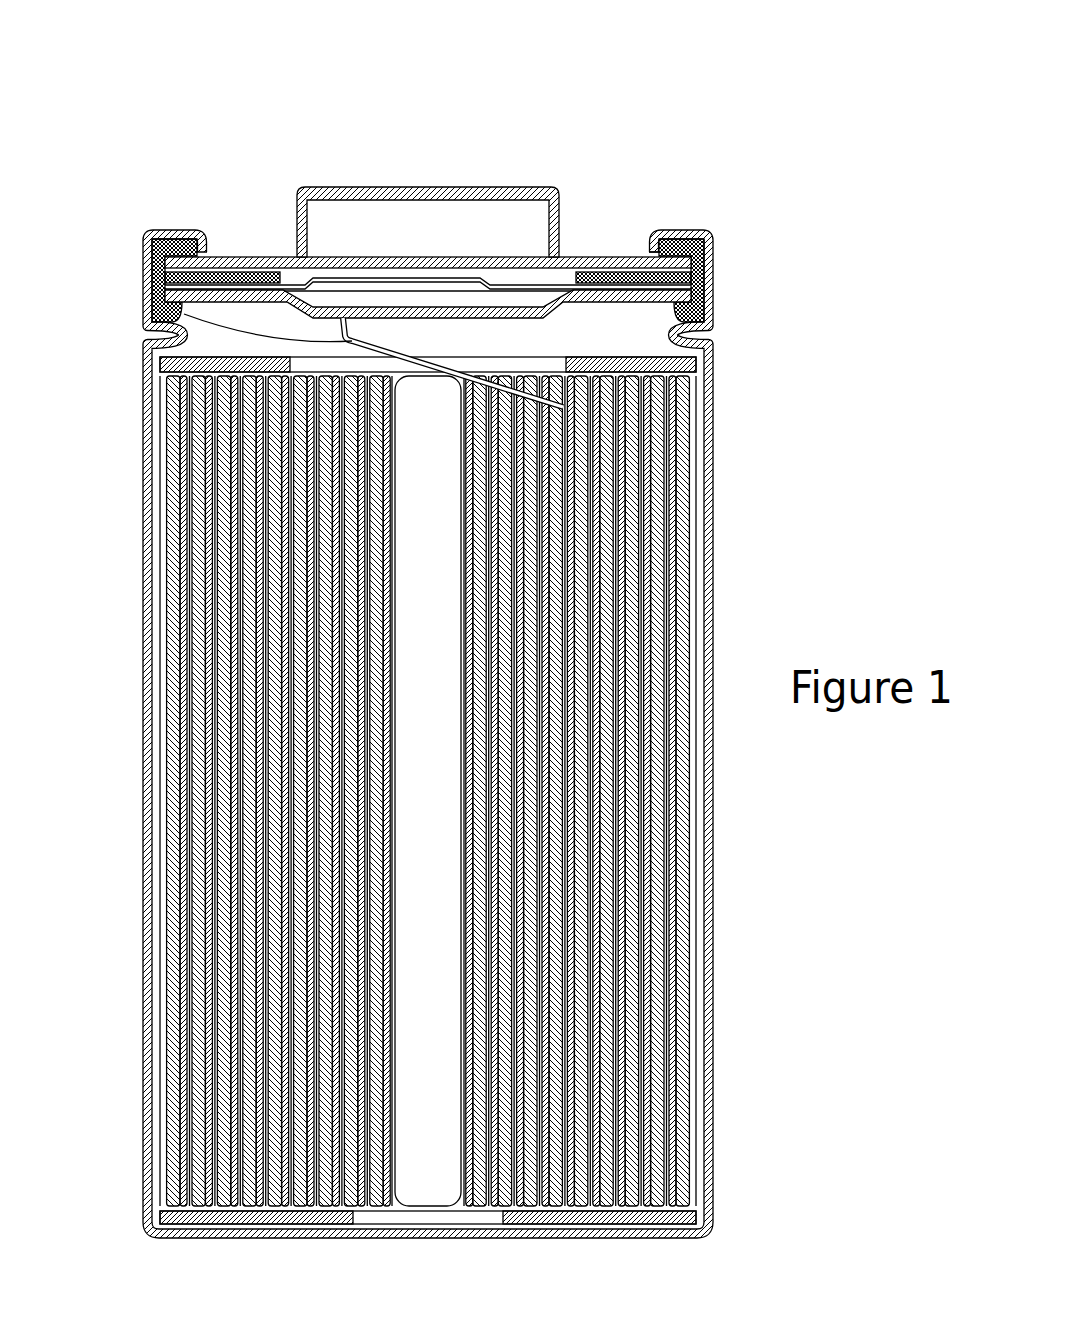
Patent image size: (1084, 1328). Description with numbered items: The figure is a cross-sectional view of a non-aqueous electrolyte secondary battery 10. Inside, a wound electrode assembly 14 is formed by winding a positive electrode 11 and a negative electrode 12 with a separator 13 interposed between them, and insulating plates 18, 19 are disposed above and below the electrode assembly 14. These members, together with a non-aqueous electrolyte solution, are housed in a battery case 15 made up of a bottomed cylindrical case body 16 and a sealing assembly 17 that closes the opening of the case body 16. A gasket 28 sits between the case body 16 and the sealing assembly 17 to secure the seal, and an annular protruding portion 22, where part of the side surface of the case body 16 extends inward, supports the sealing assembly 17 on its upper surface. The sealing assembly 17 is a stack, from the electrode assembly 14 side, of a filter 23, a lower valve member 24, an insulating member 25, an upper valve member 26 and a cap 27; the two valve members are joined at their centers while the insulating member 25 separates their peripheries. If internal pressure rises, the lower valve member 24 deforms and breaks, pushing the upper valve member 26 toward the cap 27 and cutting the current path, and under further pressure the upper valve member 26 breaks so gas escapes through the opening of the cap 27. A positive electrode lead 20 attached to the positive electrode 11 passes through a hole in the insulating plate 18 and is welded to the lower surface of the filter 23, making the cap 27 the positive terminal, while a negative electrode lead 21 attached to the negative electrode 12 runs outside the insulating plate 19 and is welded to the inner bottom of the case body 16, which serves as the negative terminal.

The non-aqueous electrolyte secondary battery 10 is at (729, 39).
The positive electrode 11 is at (664, 875).
The negative electrode 12 is at (710, 903).
The separator 13 is at (683, 943).
The wound electrode assembly 14 is at (514, 791).
The battery case 15 is at (582, 118).
The case body 16 is at (680, 229).
The sealing assembly 17 is at (591, 256).
The insulating plate 18 is at (700, 366).
The insulating plate 19 is at (700, 1218).
The positive electrode lead 20 is at (150, 310).
The negative electrode lead 21 is at (147, 1205).
The protruding portion 22 is at (147, 336).
The filter 23 is at (430, 310).
The lower valve member 24 is at (308, 270).
The insulating member 25 is at (238, 256).
The upper valve member 26 is at (339, 288).
The cap 27 is at (511, 187).
The gasket 28 is at (713, 250).